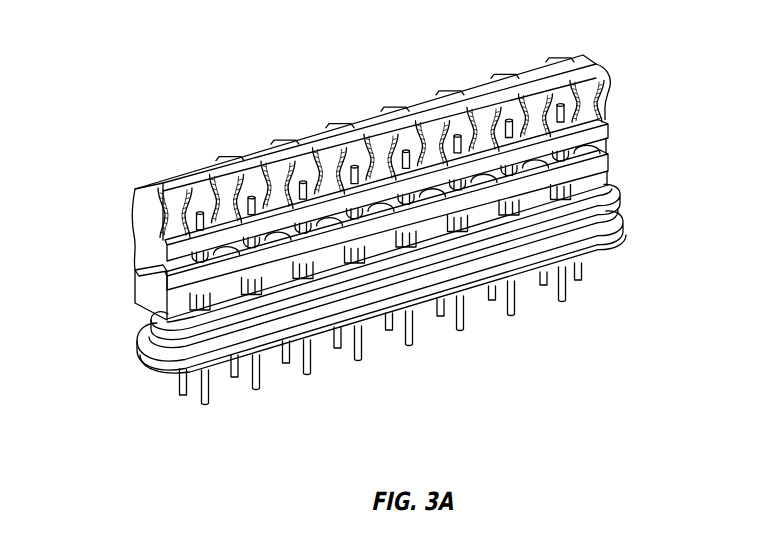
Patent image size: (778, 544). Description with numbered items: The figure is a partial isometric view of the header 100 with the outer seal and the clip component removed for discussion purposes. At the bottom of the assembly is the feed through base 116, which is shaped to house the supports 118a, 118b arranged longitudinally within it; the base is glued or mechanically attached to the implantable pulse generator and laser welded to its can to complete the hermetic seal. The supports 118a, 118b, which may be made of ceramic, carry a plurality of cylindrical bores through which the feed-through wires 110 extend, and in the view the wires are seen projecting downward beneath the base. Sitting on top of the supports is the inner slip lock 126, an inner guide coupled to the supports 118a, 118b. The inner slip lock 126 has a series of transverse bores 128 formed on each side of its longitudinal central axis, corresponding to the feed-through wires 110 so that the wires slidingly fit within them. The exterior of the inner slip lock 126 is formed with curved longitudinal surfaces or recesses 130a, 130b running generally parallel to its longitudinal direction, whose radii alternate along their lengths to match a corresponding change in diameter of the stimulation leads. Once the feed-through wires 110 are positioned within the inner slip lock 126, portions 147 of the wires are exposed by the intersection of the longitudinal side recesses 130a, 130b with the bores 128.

The header 100 is at (123, 56).
The feed-through wires 110 is at (513, 290).
The feed through base 116 is at (582, 238).
The support 118a is at (240, 312).
The support 118b is at (570, 213).
The inner slip lock 126 is at (598, 108).
The transverse bores 128 is at (575, 116).
The curved longitudinal recess 130a is at (137, 246).
The curved longitudinal recess 130b is at (155, 270).
The exposed portions of the feed-through wires 147 is at (572, 151).